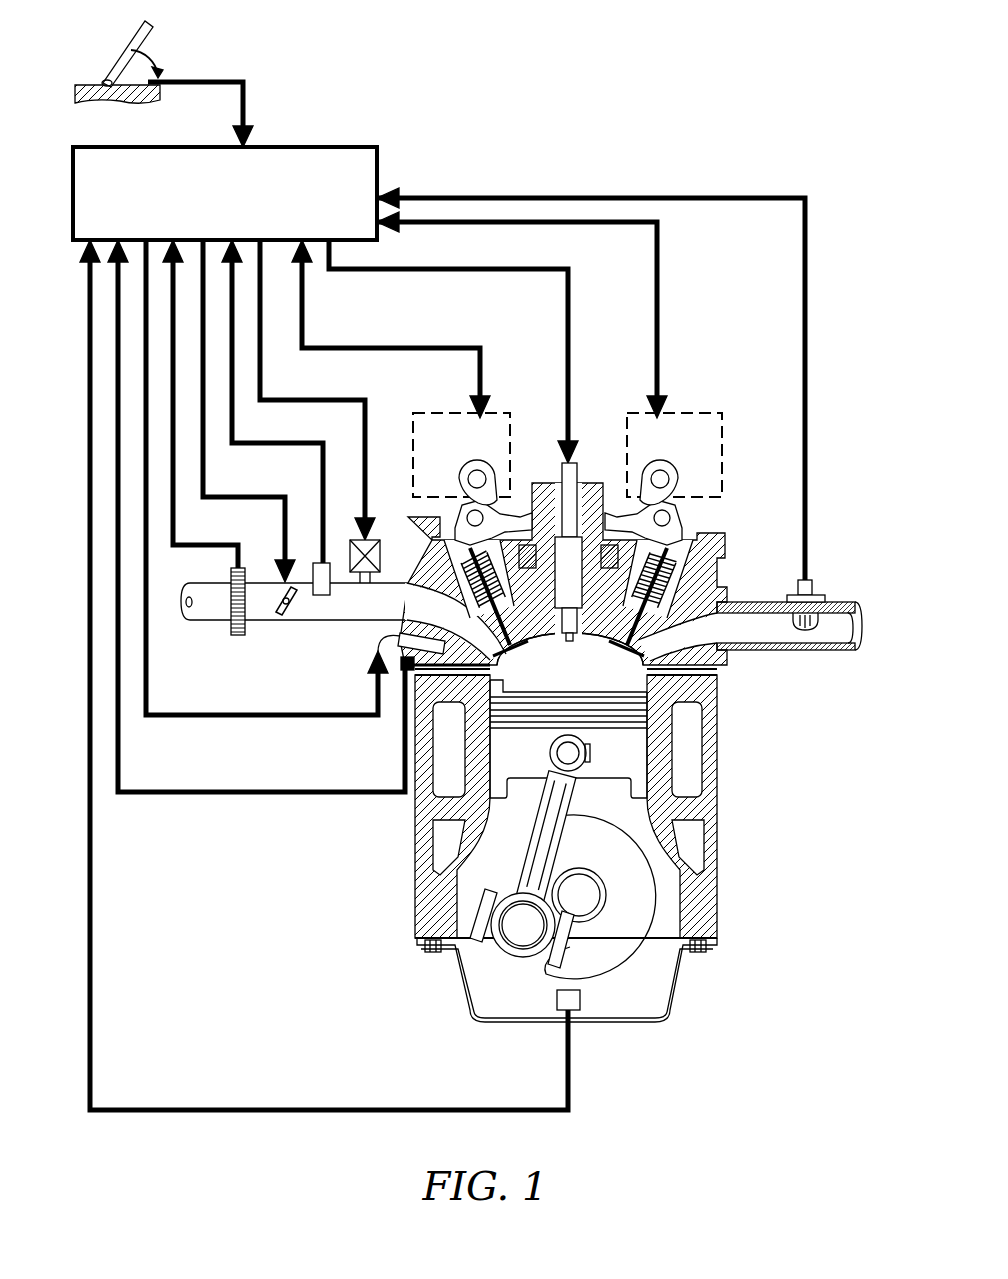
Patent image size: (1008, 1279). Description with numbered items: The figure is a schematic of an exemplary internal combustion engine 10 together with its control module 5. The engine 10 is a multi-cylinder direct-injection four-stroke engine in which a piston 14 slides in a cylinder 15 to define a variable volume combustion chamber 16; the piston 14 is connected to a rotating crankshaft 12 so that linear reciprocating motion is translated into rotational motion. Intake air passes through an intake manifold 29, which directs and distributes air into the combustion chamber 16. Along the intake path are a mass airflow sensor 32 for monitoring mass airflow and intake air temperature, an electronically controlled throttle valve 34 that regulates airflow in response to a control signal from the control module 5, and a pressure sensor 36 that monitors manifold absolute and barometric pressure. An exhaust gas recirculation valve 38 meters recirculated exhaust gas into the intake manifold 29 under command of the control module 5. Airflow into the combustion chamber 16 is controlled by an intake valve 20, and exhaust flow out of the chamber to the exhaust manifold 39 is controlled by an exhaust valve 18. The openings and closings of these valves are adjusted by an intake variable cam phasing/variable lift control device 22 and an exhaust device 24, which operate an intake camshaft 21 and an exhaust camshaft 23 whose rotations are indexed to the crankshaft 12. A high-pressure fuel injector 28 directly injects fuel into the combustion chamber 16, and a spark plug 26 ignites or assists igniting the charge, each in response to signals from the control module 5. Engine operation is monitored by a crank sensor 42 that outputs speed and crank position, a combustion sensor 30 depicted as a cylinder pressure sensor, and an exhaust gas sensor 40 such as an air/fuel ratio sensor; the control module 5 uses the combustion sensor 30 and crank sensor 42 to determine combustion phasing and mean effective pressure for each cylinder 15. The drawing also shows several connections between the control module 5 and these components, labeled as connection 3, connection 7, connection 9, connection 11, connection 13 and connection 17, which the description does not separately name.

The throttle control signal line 3 is at (225, 497).
The control module 5 is at (330, 145).
The intake cam actuator signal line 7 is at (402, 348).
The fuel injector signal line 9 is at (497, 268).
The internal combustion engine 10 is at (722, 808).
The exhaust cam actuator signal line 11 is at (657, 350).
The crankshaft 12 is at (622, 955).
The sensor signal line 13 is at (287, 795).
The piston 14 is at (601, 764).
The cylinder 15 is at (297, 1110).
The combustion chamber 16 is at (520, 678).
The port injector signal line 17 is at (290, 717).
The exhaust valve 18 is at (627, 641).
The intake valve 20 is at (503, 632).
The intake camshaft 21 is at (478, 480).
The intake variable cam phasing/variable lift control device 22 is at (505, 425).
The exhaust camshaft 23 is at (662, 482).
The exhaust variable cam phasing/variable lift control device 24 is at (712, 478).
The spark plug 26 is at (585, 462).
The fuel injector 28 is at (375, 645).
The intake manifold 29 is at (392, 590).
The combustion sensor 30 is at (402, 672).
The mass airflow sensor 32 is at (238, 636).
The throttle valve 34 is at (290, 615).
The pressure sensor 36 is at (322, 595).
The exhaust gas recirculation valve 38 is at (358, 575).
The exhaust manifold 39 is at (755, 602).
The exhaust gas sensor 40 is at (812, 588).
The crank sensor 42 is at (563, 1003).